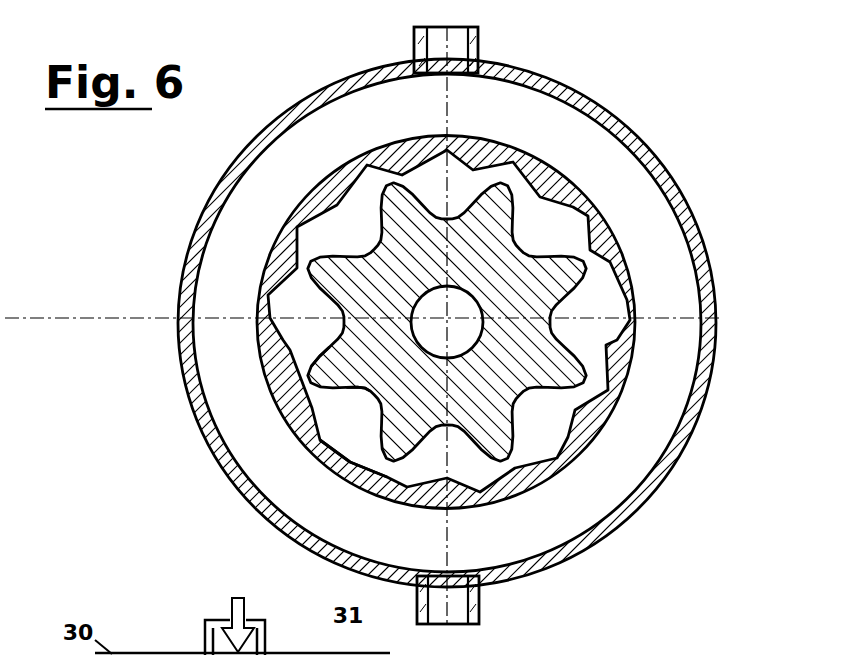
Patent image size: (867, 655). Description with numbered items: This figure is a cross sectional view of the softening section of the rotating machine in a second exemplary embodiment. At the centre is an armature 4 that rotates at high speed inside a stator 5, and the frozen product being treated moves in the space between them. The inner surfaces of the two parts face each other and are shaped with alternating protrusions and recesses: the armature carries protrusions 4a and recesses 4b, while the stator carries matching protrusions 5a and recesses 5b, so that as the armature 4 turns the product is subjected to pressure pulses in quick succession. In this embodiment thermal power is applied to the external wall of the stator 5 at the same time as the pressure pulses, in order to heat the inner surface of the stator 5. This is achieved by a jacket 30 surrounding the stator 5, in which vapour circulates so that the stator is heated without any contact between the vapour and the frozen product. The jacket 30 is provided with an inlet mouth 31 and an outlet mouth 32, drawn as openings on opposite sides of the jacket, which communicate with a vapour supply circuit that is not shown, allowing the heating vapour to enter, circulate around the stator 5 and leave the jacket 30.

The armature 4 is at (345, 315).
The stator 5 is at (262, 293).
The protrusions of the armature 4a is at (365, 382).
The recesses of the armature 4b is at (330, 396).
The protrusions of the stator 5a is at (352, 447).
The recesses of the stator 5b is at (353, 484).
The jacket 30 is at (268, 115).
The inlet mouth 31 is at (445, 43).
The outlet mouth 32 is at (457, 617).